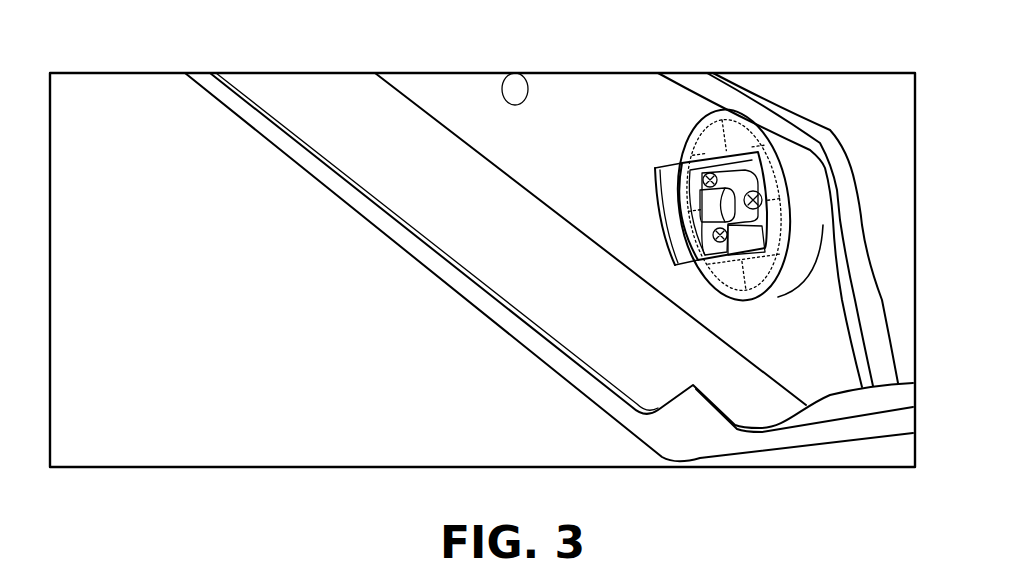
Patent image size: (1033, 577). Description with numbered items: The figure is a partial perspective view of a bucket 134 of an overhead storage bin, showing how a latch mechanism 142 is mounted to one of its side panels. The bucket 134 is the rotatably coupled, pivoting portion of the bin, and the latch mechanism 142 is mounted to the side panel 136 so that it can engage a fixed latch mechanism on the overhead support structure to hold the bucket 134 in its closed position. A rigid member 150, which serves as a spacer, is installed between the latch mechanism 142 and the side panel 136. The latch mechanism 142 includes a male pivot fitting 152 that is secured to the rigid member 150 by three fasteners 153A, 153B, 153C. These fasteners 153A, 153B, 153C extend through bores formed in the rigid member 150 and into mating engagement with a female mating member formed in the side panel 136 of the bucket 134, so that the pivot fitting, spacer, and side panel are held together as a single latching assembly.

The bucket 134 is at (538, 390).
The side panel 136 is at (577, 92).
The latch mechanism 142 is at (647, 205).
The rigid member 150 is at (773, 298).
The male pivot fitting 152 is at (660, 236).
The fastener 153A is at (711, 173).
The fastener 153B is at (743, 200).
The fastener 153C is at (762, 193).